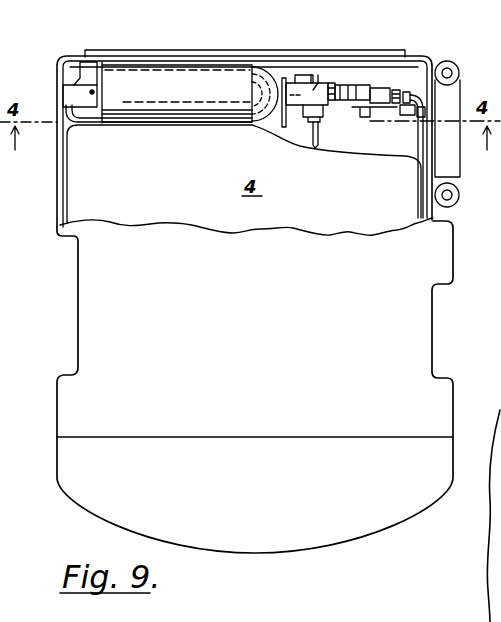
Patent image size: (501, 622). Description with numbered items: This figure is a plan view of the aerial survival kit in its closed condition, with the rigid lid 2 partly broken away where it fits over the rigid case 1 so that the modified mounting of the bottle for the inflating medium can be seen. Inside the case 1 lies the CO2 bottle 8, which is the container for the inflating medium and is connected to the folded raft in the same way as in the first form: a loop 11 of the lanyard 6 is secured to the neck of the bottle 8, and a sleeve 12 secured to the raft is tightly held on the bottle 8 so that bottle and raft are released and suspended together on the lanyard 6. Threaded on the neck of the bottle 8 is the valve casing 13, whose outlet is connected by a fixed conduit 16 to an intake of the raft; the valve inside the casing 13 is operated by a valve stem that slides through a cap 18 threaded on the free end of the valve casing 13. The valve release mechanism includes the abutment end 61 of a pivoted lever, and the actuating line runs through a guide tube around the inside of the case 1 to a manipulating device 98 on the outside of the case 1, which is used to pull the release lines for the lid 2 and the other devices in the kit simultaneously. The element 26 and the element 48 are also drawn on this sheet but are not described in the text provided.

The case 1 is at (55, 161).
The lid 2 is at (95, 322).
The lanyard 6 is at (273, 121).
The CO2 bottle 8 is at (263, 72).
The loop 11 is at (250, 90).
The sleeve 12 is at (232, 106).
The valve casing 13 is at (320, 88).
The conduit 16 is at (320, 140).
The cap 18 is at (332, 112).
The tube fitting 26 is at (362, 85).
The clip 48 is at (67, 92).
The abutment end 61 is at (383, 86).
The manipulating device 98 is at (447, 155).